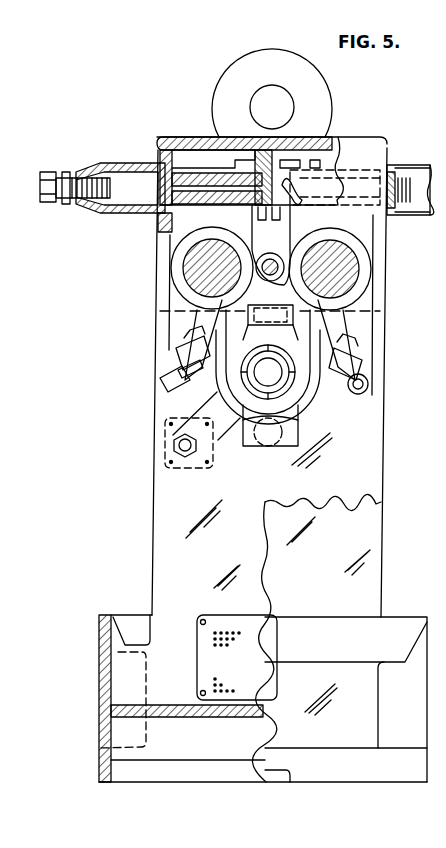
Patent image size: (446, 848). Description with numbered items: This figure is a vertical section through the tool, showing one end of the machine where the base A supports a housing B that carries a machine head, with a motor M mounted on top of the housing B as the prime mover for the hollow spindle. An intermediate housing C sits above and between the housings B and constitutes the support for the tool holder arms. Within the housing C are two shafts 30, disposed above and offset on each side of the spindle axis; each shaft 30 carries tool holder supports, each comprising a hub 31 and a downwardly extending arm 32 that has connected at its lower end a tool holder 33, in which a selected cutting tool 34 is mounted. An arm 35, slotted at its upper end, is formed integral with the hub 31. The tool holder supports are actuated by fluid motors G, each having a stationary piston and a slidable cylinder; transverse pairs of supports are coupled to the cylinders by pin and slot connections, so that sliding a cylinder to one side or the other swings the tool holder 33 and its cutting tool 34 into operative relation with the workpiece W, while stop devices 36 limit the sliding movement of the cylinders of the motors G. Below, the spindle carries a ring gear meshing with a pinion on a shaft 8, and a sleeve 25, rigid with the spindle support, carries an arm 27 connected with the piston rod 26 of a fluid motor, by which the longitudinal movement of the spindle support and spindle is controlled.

The shaft 8 is at (262, 255).
The sleeve 25 is at (314, 398).
The piston rod 26 is at (178, 446).
The arm 27 is at (208, 406).
The shafts 30 is at (190, 276).
The hub 31 is at (178, 295).
The arm 32 is at (180, 326).
The tool holder 33 is at (173, 362).
The cutting tools 34 is at (165, 384).
The arm 35 is at (208, 210).
The stop devices 36 is at (52, 204).
The base A is at (263, 698).
The housing B is at (269, 459).
The intermediate housing C is at (198, 137).
The fluid motors G is at (173, 158).
The motor M is at (272, 93).
The workpiece W is at (270, 376).